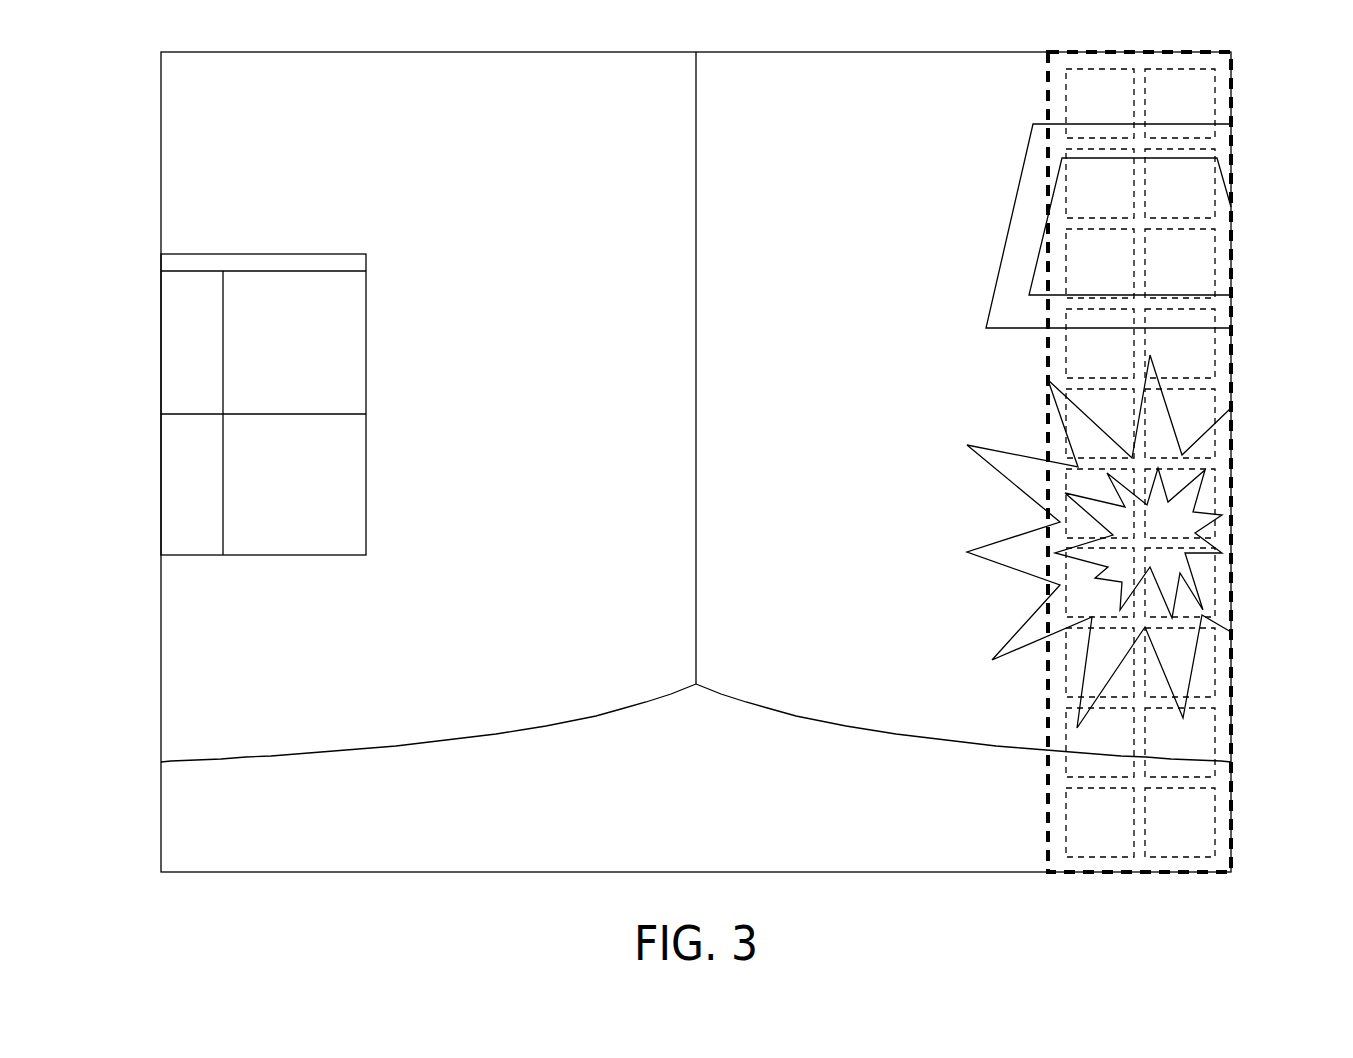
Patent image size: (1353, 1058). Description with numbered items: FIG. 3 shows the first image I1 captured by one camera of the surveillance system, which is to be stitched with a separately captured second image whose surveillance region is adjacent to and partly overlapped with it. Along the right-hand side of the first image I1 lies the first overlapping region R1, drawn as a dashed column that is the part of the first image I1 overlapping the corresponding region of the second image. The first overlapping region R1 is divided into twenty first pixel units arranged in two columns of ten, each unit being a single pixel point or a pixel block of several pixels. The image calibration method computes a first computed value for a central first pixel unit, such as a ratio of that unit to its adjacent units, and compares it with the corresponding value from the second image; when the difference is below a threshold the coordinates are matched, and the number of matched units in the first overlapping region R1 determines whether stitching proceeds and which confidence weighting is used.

The first image I1 is at (696, 481).
The first overlapping region R1 is at (1233, 72).